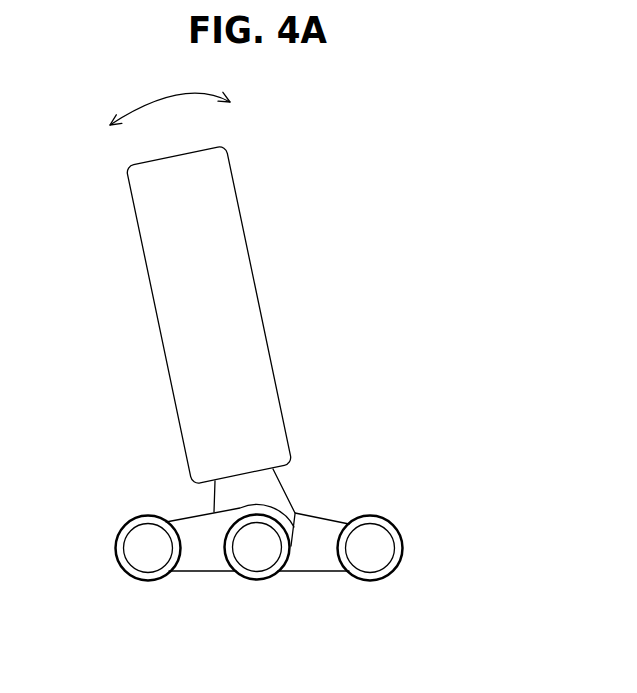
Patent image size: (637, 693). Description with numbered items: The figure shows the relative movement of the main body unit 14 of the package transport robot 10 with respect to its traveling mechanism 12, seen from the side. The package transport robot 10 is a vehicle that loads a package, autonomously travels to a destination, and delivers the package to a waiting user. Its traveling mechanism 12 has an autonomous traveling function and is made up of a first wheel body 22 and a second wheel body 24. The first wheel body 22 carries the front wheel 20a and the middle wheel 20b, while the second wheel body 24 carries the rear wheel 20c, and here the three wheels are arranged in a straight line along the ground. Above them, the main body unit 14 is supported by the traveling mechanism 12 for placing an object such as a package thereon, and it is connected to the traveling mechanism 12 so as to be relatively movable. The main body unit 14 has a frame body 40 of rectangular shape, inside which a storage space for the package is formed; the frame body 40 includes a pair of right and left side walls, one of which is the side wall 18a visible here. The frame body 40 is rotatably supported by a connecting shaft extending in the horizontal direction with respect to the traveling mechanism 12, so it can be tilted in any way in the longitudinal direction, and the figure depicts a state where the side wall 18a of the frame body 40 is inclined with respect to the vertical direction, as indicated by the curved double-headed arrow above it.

The package transport robot 10 is at (65, 481).
The traveling mechanism 12 is at (259, 543).
The main body unit 14 is at (196, 315).
The right side wall 18a is at (158, 258).
The frame body 40 is at (196, 315).
The front wheel 20a is at (146, 582).
The middle wheel 20b is at (257, 580).
The rear wheel 20c is at (370, 582).
The first wheel body 22 is at (207, 560).
The second wheel body 24 is at (310, 560).